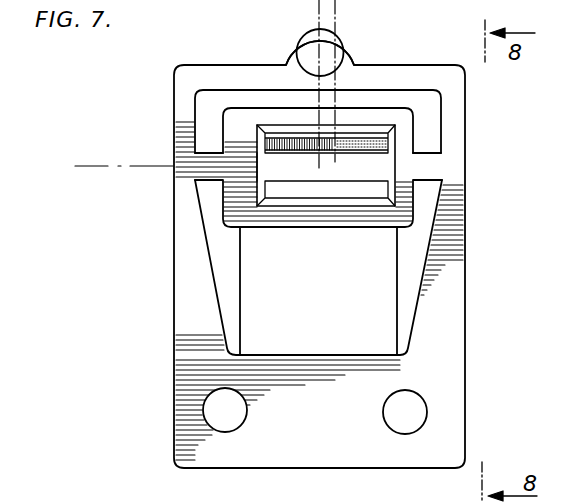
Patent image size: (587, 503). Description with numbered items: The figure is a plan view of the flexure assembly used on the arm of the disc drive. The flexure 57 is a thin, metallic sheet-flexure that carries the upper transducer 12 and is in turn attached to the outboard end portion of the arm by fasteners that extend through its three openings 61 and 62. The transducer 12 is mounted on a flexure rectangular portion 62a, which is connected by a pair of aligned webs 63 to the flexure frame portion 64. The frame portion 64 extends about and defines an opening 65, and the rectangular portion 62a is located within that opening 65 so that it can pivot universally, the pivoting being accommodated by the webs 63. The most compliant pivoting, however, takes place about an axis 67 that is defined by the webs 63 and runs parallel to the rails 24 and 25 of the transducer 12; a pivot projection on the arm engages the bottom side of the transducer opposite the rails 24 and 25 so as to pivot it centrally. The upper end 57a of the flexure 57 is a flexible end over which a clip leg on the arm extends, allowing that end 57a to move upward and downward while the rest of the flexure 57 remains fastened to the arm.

The flexure 57 is at (467, 300).
The upper end of the flexure 57a is at (352, 33).
The openings 61 is at (207, 413).
The opening 62 is at (298, 46).
The flexure rectangular portion 62a is at (237, 123).
The webs 63 is at (193, 202).
The flexure frame portion 64 is at (185, 252).
The opening 65 is at (220, 285).
The axis 67 is at (110, 165).
The rail 24 is at (368, 145).
The rail 25 is at (347, 190).
The upper transducer 12 is at (314, 203).